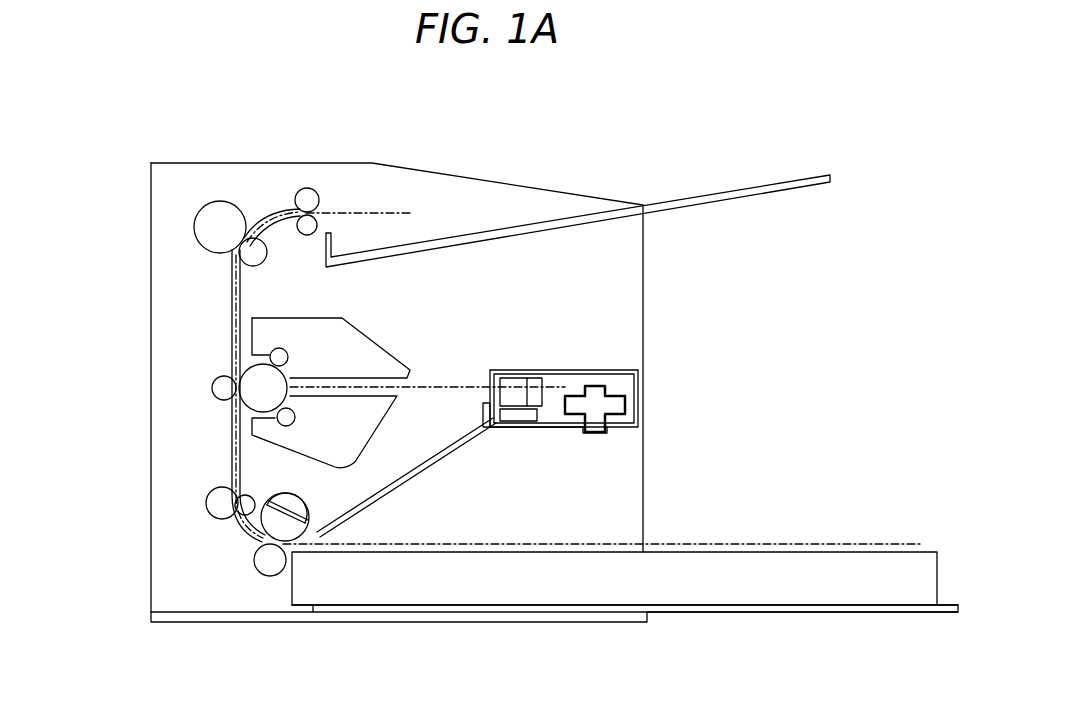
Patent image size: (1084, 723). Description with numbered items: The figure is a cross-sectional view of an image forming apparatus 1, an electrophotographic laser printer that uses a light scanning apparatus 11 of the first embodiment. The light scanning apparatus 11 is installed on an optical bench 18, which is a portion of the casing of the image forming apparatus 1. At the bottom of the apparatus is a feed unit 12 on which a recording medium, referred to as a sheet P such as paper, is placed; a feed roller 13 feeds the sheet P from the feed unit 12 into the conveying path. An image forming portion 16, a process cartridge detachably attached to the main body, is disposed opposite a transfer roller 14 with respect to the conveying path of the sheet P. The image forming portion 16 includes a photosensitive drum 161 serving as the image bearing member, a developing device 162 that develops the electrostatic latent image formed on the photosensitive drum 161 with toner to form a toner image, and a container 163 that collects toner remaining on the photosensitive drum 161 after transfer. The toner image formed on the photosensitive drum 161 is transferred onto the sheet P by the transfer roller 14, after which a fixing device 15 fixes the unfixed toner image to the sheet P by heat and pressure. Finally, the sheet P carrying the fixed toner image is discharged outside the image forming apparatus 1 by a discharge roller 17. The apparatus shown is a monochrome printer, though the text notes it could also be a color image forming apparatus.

The image forming apparatus 1 is at (562, 103).
The light scanning apparatus 11 is at (567, 370).
The feed unit 12 is at (672, 604).
The feed roller 13 is at (300, 500).
The transfer roller 14 is at (218, 388).
The fixing device 15 is at (195, 223).
The image forming portion 16 is at (408, 363).
The photosensitive drum 161 is at (288, 378).
The developing device 162 is at (395, 440).
The container 163 is at (377, 347).
The discharge roller 17 is at (303, 190).
The optical bench 18 is at (537, 428).
The sheet P is at (770, 543).